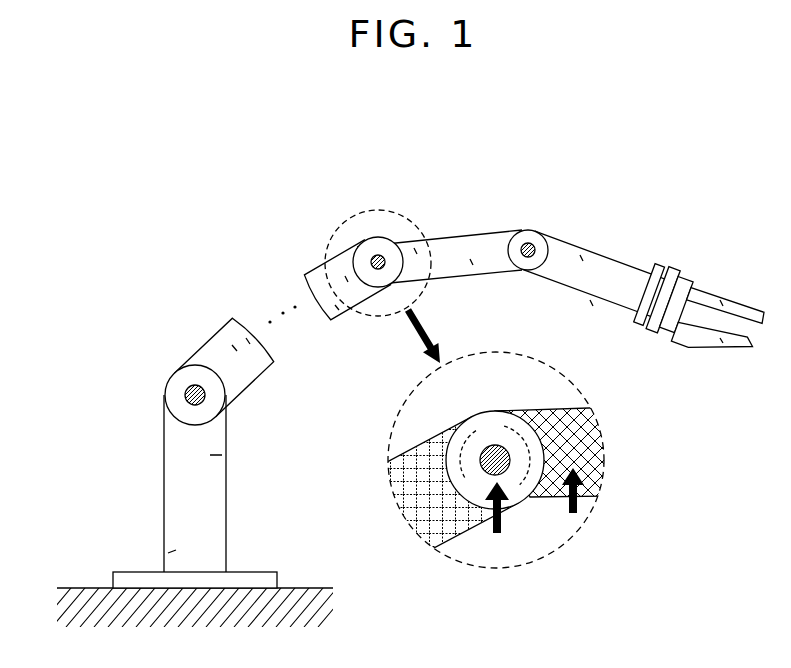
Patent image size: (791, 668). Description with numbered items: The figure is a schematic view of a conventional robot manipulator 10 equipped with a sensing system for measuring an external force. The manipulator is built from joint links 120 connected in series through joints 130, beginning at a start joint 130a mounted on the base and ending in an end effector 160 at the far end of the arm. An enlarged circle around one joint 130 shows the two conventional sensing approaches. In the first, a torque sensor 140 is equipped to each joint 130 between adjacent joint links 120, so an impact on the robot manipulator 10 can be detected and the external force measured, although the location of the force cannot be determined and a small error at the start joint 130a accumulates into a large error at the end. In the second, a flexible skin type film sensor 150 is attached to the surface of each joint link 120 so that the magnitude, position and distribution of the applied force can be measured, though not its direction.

The robot manipulator 10 is at (218, 194).
The joint link 120 is at (226, 332).
The joint 130 is at (378, 250).
The start joint 130a is at (173, 393).
The gripper (end effector) 160 is at (727, 282).
The torque sensor 140 is at (497, 550).
The skin type film sensor 150 is at (615, 532).